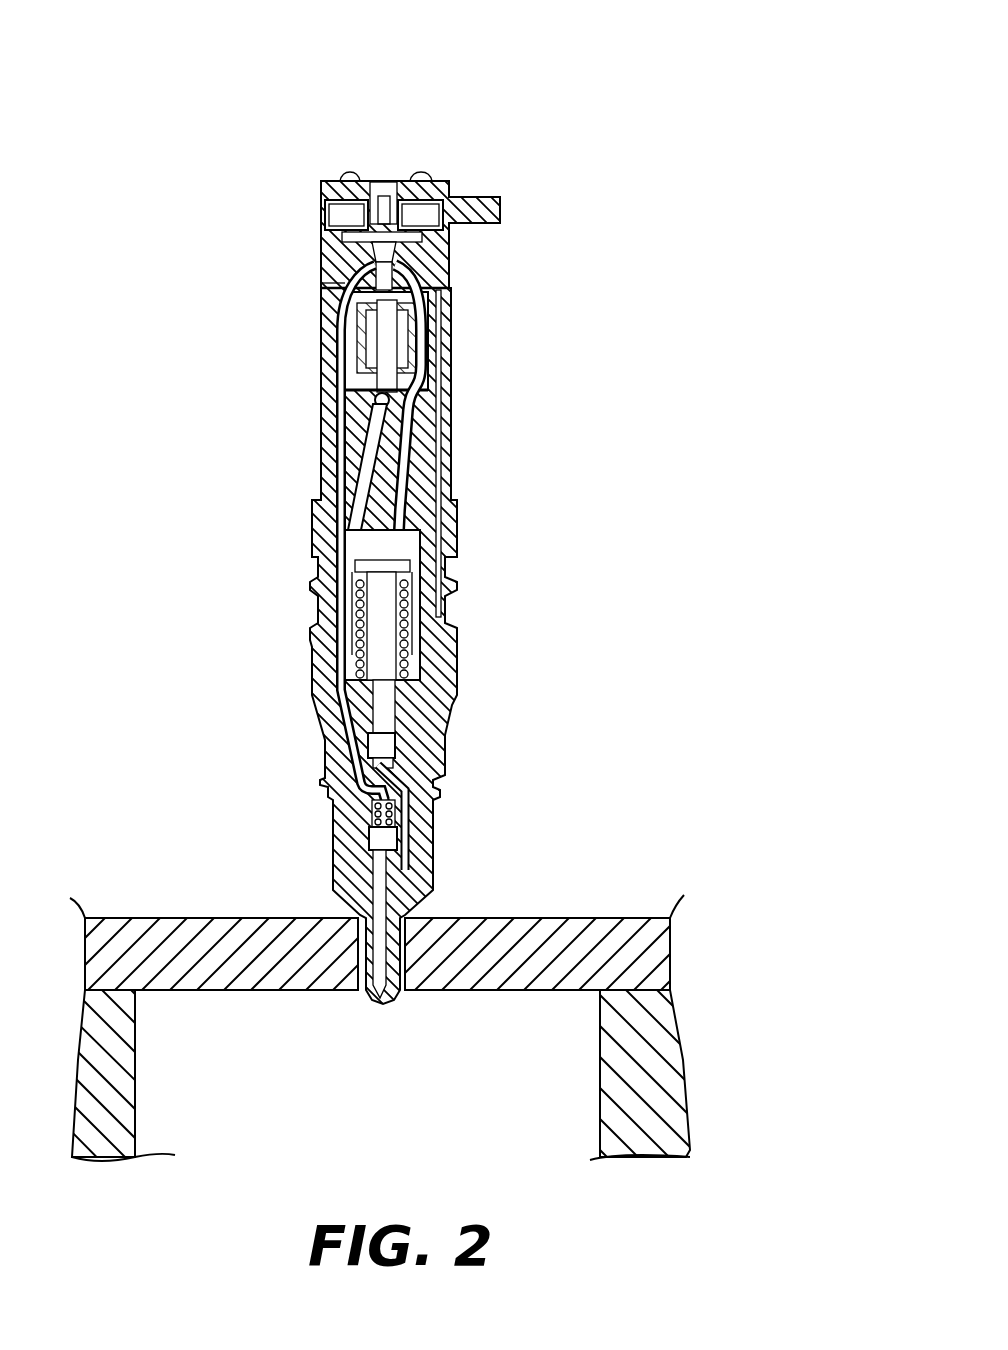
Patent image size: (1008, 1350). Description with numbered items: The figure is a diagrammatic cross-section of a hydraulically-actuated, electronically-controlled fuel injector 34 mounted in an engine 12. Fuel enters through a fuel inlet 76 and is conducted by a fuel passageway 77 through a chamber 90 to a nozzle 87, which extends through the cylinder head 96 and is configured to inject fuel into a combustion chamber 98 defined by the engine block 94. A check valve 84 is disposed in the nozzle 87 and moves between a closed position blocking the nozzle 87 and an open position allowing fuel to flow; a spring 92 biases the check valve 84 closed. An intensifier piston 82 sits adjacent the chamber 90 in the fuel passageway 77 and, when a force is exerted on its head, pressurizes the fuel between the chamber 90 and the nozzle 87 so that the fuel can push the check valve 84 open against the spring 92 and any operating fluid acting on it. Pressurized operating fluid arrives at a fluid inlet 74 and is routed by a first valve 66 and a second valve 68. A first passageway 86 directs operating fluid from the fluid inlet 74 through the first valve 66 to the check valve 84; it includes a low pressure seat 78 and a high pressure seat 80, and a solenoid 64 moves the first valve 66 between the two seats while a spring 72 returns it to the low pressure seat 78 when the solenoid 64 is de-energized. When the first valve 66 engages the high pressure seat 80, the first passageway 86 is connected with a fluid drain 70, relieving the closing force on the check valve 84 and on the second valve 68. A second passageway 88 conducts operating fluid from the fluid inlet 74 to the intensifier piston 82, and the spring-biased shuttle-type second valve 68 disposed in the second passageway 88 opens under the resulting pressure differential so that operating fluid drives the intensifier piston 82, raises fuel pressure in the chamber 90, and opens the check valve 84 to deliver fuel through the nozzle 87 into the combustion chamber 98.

The fuel injector 34 is at (395, 580).
The spring 72 is at (385, 196).
The solenoid 64 is at (430, 200).
The first valve 66 is at (322, 248).
The high pressure seat 80 is at (425, 262).
The fluid drain 70 is at (321, 285).
The low pressure seat 78 is at (448, 300).
The second valve 68 is at (400, 322).
The first passageway 86 is at (322, 424).
The second passageway 88 is at (400, 450).
The intensifier piston 82 is at (382, 604).
The fluid inlet 74 is at (437, 613).
The chamber 90 is at (385, 735).
The fuel inlet 76 is at (440, 748).
The fuel passageway 77 is at (440, 782).
The spring 92 is at (345, 845).
The check valve 84 is at (412, 855).
The nozzle 87 is at (405, 990).
The cylinder head 96 is at (634, 962).
The engine block 94 is at (657, 1058).
The combustion chamber 98 is at (397, 1114).
The engine 12 is at (390, 1027).